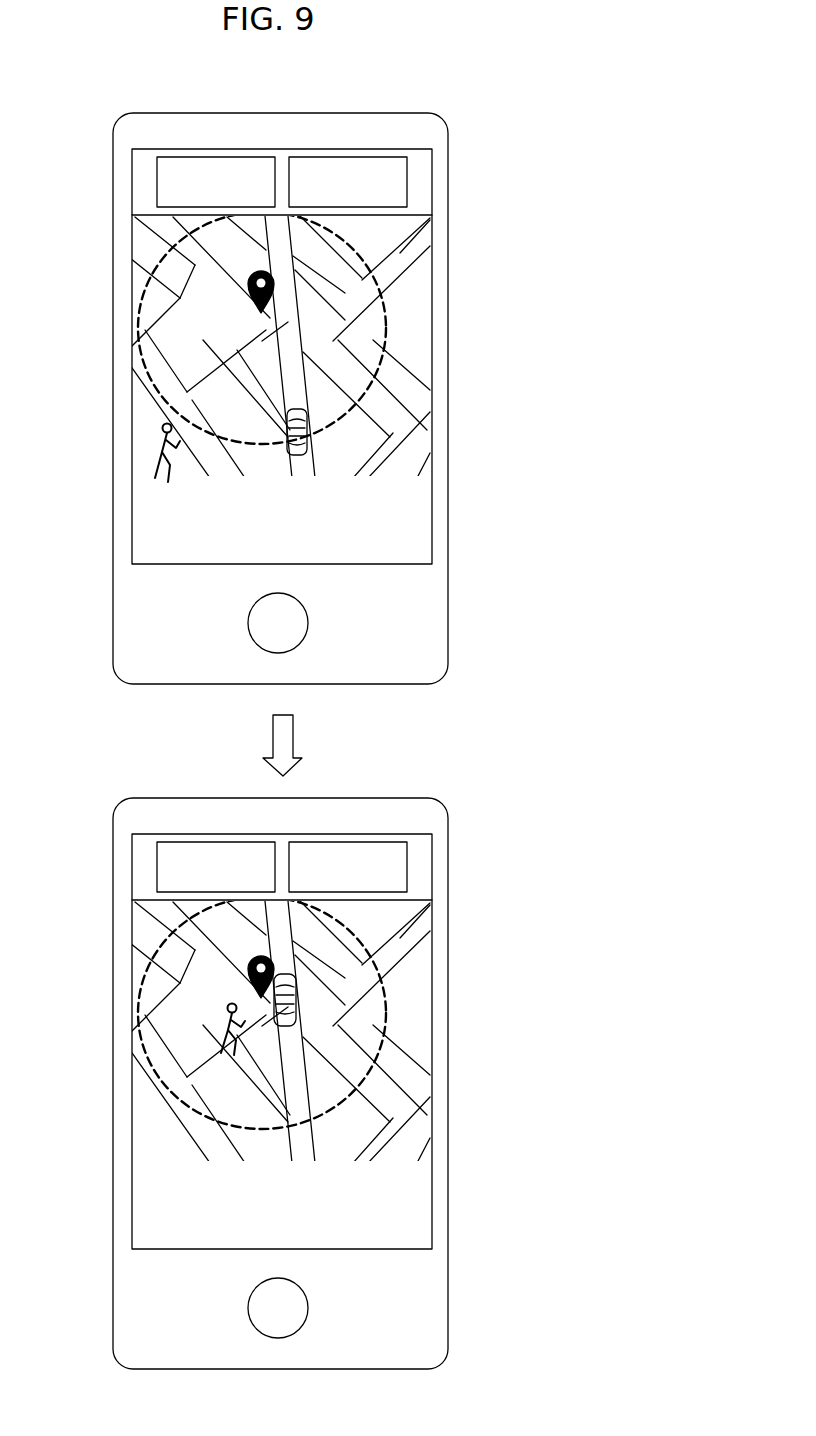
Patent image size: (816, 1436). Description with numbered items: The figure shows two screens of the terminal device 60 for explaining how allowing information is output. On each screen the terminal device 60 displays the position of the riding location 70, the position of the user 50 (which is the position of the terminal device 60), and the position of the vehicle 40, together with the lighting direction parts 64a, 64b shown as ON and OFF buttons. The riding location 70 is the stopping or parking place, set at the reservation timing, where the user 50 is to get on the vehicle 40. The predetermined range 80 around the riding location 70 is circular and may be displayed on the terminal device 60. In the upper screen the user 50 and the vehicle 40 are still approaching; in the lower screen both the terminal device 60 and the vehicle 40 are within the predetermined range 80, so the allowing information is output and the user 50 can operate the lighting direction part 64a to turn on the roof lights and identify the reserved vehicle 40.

The vehicle 40 is at (303, 456).
The user 50 is at (173, 466).
The terminal device 60 is at (449, 234).
The lighting direction part 64a is at (194, 157).
The lighting direction part 64b is at (350, 157).
The riding location 70 is at (252, 300).
The predetermined range 80 is at (386, 318).